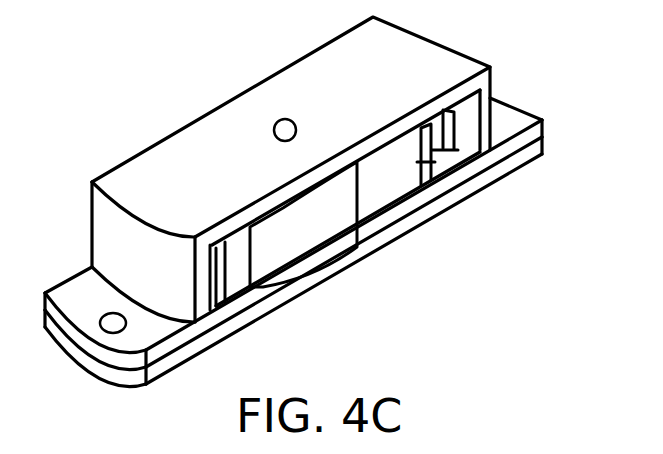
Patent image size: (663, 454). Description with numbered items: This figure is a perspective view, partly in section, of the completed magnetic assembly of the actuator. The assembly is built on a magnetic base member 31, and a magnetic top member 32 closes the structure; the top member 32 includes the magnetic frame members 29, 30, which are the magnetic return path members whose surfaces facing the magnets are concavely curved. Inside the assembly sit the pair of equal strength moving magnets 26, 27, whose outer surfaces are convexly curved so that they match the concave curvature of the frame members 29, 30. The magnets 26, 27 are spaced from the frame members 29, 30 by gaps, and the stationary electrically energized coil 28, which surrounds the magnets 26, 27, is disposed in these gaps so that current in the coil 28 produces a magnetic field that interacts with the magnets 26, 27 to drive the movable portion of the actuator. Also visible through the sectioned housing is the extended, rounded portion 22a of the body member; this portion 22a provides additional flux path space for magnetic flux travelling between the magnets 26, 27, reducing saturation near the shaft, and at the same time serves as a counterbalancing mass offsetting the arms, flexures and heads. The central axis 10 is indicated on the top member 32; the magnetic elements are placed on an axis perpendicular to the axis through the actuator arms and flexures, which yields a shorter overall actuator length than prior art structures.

The central axis 10 is at (285, 118).
The extended rounded portion of body member 22a is at (313, 227).
The magnet 26 is at (432, 162).
The magnet 27 is at (236, 283).
The coil 28 is at (444, 123).
The magnetic frame member 29 is at (215, 304).
The magnetic frame member 30 is at (490, 113).
The magnetic base member 31 is at (428, 222).
The magnetic top member 32 is at (365, 106).